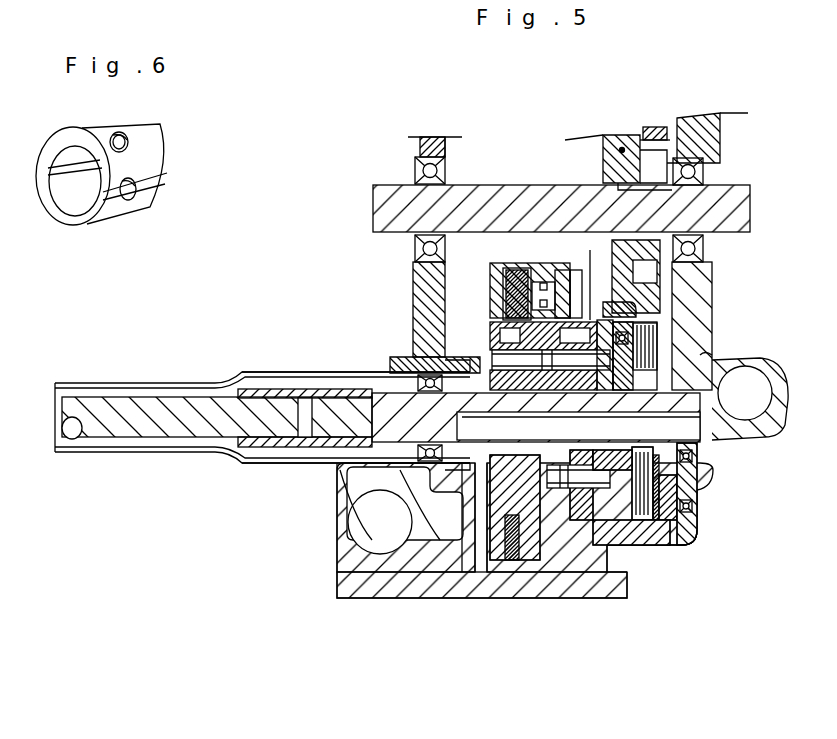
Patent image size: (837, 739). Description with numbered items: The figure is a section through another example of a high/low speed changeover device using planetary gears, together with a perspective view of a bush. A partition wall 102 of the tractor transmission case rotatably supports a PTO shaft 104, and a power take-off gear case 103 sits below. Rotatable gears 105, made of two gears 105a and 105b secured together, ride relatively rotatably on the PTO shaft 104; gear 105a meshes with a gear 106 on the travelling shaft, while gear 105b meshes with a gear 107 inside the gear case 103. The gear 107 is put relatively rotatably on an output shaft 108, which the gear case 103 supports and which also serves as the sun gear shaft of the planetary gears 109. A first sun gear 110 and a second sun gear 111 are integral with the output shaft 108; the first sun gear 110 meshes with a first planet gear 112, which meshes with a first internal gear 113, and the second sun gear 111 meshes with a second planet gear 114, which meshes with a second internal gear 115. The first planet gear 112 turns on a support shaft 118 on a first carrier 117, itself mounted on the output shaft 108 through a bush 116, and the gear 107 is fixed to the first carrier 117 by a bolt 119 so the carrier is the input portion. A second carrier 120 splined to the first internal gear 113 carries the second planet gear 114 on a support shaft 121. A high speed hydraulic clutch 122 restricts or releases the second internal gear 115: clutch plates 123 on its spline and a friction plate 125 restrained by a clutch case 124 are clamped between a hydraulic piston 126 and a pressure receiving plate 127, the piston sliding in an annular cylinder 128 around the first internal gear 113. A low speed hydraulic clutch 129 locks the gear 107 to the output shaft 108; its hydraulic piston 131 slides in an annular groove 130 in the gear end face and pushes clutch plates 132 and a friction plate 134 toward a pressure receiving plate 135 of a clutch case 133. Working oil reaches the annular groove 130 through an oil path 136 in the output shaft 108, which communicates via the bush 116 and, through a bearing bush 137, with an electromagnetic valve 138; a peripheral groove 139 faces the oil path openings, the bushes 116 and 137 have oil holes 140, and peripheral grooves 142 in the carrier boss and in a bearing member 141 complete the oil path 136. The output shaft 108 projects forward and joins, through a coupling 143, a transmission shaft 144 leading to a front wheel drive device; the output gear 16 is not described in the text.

In FIG. 5, the output gear 16 is at (700, 472).
In FIG. 5, the partition wall 102 is at (725, 262).
In FIG. 5, the power take-off gear case 103 is at (690, 560).
In FIG. 5, the PTO shaft 104 is at (712, 192).
In FIG. 5, the rotatable gears 105 is at (622, 148).
In FIG. 5, the gear 105a is at (690, 150).
In FIG. 5, the gear 105b is at (640, 300).
In FIG. 5, the gear 106 is at (660, 133).
In FIG. 5, the gear 107 is at (640, 312).
In FIG. 5, the output shaft 108 is at (768, 432).
In FIG. 5, the planetary gears 109 is at (545, 575).
In FIG. 5, the first sun gear 110 is at (565, 570).
In FIG. 5, the second sun gear 111 is at (445, 560).
In FIG. 5, the first planet gear 112 is at (560, 340).
In FIG. 5, the first internal gear 113 is at (605, 252).
In FIG. 5, the second planet gear 114 is at (500, 345).
In FIG. 5, the second internal gear 115 is at (505, 325).
In FIG. 6, the bush 116 is at (168, 165).
In FIG. 5, the first carrier 117 is at (627, 562).
In FIG. 5, the support shaft 118 is at (660, 345).
In FIG. 5, the bolt 119 is at (597, 575).
In FIG. 5, the second carrier 120 is at (428, 335).
In FIG. 5, the support shaft 121 is at (420, 368).
In FIG. 5, the high speed hydraulic clutch 122 is at (517, 264).
In FIG. 5, the clutch plates 123 is at (520, 275).
In FIG. 5, the clutch case 124 is at (520, 268).
In FIG. 5, the friction plate 125 is at (530, 262).
In FIG. 5, the hydraulic piston 126 is at (545, 300).
In FIG. 5, the pressure receiving plate 127 is at (430, 290).
In FIG. 5, the annular cylinder 128 is at (570, 300).
In FIG. 5, the low speed hydraulic clutch 129 is at (700, 532).
In FIG. 5, the annular groove 130 is at (655, 560).
In FIG. 5, the hydraulic piston 131 is at (668, 562).
In FIG. 5, the clutch plates 132 is at (700, 492).
In FIG. 5, the clutch case 133 is at (690, 512).
In FIG. 5, the friction plate 134 is at (690, 575).
In FIG. 5, the pressure receiving plate 135 is at (675, 553).
In FIG. 5, the oil path 136 is at (578, 428).
In FIG. 6, the bearing bush 137 is at (150, 174).
In FIG. 5, the bearing bush 137 is at (385, 383).
In FIG. 5, the electromagnetic valve 138 is at (335, 570).
In FIG. 5, the peripheral groove 139 is at (705, 448).
In FIG. 6, the oil holes 140 is at (128, 140).
In FIG. 5, the bearing member 141 is at (360, 500).
In FIG. 5, the peripheral grooves 142 is at (702, 383).
In FIG. 5, the coupling 143 is at (280, 385).
In FIG. 5, the transmission shaft 144 is at (190, 405).